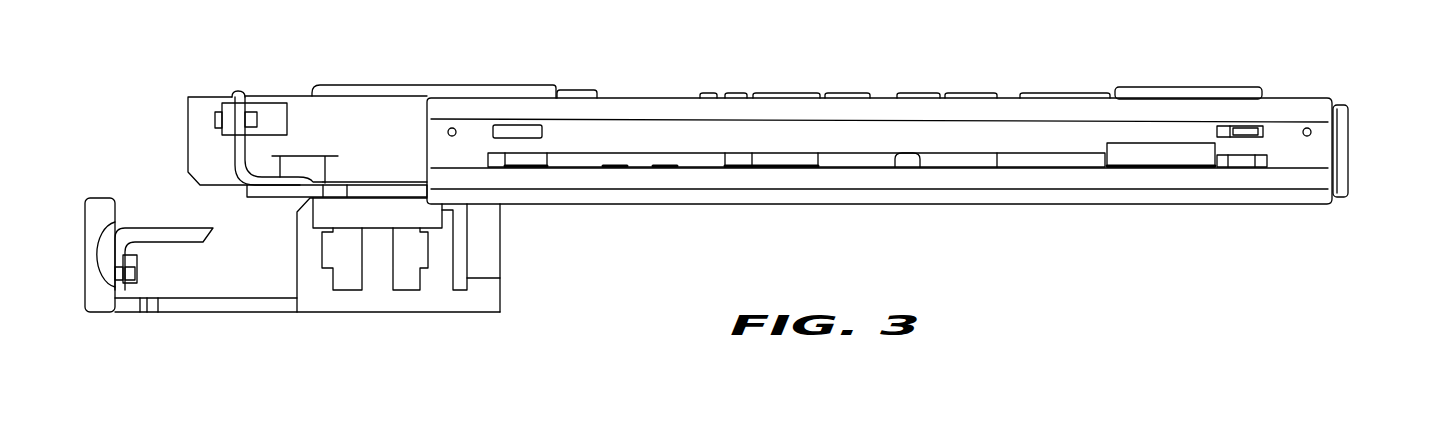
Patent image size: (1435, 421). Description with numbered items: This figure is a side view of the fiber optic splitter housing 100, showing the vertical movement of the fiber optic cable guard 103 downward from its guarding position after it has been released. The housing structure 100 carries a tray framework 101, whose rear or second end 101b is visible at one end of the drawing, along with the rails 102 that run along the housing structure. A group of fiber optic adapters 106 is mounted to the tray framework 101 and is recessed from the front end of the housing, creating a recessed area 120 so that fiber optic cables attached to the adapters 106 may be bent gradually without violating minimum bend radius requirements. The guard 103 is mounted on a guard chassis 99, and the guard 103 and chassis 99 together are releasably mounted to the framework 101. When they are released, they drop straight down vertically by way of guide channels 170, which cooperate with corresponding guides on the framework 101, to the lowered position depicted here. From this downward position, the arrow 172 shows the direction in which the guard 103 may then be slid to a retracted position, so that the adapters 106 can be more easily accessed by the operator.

The fiber optic splitter housing 100 is at (727, 57).
The tray framework 101 is at (1010, 110).
The second end of the tray framework 101b is at (1407, 80).
The rails 102 is at (872, 137).
The fiber optic cable guard 103 is at (95, 210).
The fiber optic adapters 106 is at (229, 113).
The recessed area 120 is at (297, 323).
The guide channels 170 is at (348, 273).
The arrow 172 is at (535, 253).
The guard chassis 99 is at (475, 300).